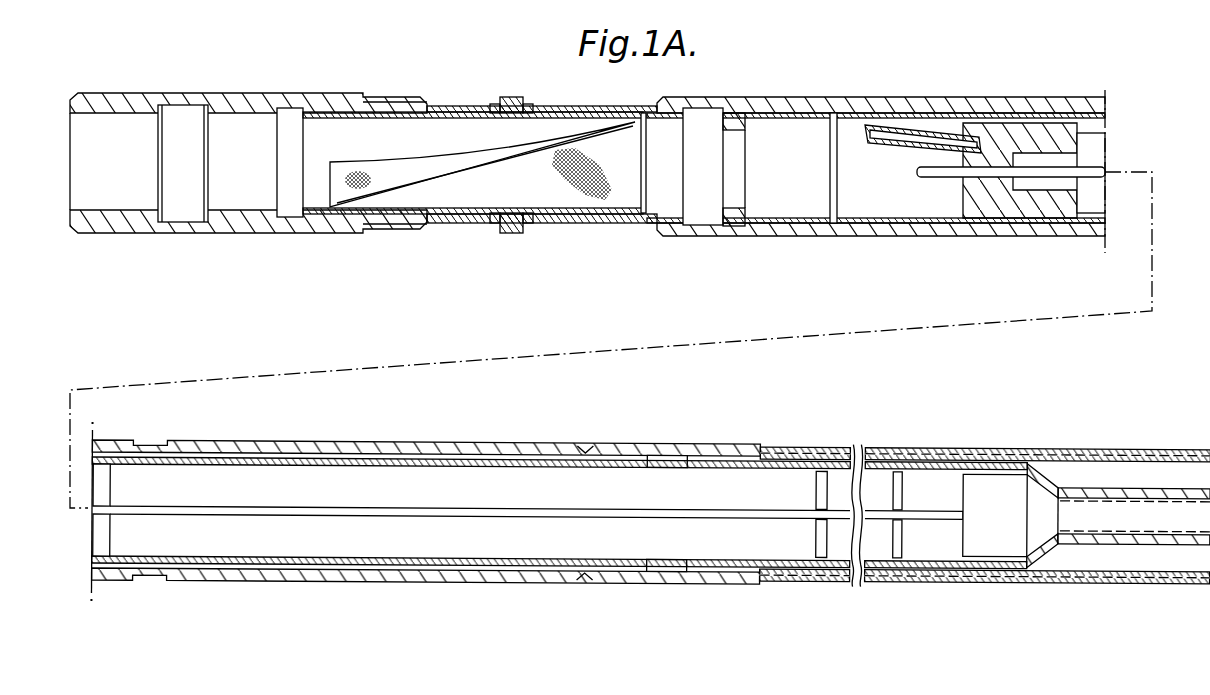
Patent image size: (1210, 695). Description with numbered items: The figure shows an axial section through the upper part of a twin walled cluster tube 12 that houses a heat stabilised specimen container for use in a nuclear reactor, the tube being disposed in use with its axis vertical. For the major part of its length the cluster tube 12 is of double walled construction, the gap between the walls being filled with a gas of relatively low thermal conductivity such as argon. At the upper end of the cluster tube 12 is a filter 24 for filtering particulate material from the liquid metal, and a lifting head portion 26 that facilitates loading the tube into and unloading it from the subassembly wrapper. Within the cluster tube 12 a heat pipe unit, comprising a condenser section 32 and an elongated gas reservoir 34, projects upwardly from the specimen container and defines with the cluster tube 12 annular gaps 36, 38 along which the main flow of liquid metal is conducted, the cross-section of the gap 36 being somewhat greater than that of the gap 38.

The cluster tube 12 is at (268, 442).
The filter 24 is at (590, 188).
The lifting head portion 26 is at (223, 226).
The condenser section 32 is at (1163, 547).
The elongated gas reservoir 34 is at (311, 558).
The annular gap 36 is at (1083, 563).
The annular gap 38 is at (348, 456).